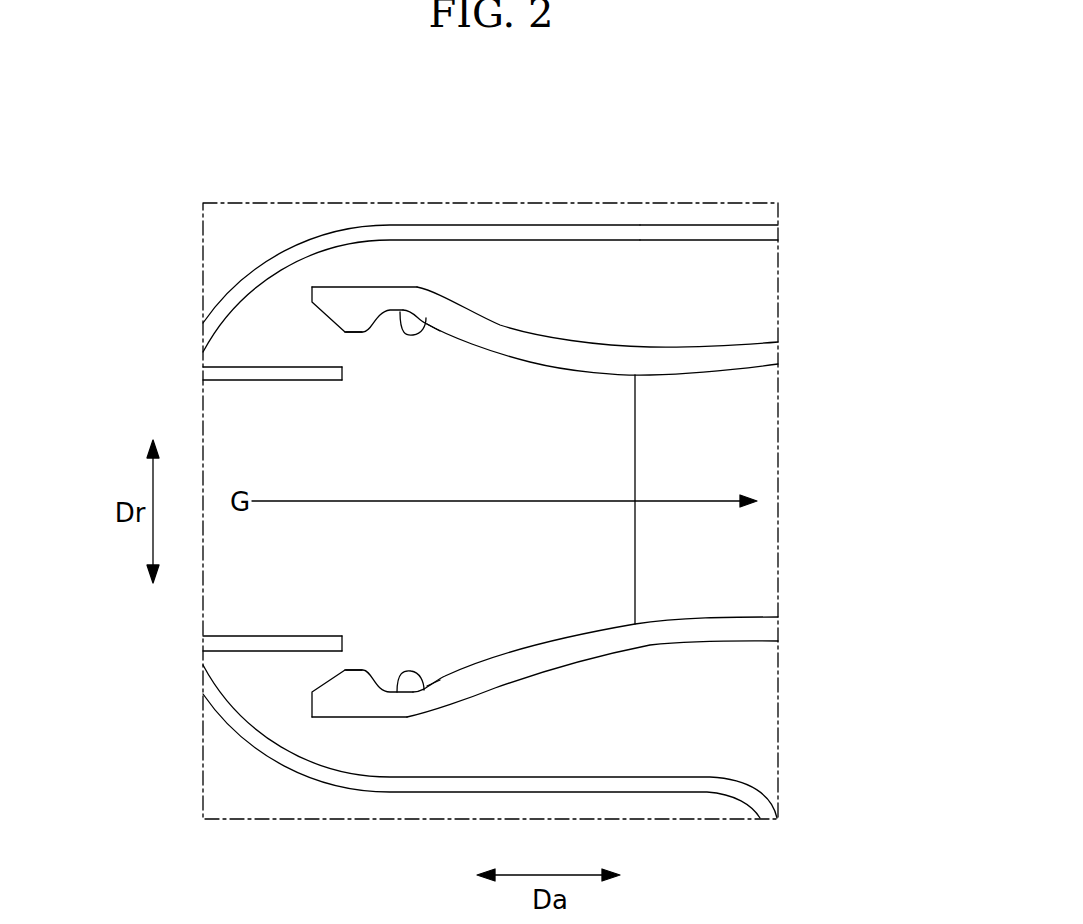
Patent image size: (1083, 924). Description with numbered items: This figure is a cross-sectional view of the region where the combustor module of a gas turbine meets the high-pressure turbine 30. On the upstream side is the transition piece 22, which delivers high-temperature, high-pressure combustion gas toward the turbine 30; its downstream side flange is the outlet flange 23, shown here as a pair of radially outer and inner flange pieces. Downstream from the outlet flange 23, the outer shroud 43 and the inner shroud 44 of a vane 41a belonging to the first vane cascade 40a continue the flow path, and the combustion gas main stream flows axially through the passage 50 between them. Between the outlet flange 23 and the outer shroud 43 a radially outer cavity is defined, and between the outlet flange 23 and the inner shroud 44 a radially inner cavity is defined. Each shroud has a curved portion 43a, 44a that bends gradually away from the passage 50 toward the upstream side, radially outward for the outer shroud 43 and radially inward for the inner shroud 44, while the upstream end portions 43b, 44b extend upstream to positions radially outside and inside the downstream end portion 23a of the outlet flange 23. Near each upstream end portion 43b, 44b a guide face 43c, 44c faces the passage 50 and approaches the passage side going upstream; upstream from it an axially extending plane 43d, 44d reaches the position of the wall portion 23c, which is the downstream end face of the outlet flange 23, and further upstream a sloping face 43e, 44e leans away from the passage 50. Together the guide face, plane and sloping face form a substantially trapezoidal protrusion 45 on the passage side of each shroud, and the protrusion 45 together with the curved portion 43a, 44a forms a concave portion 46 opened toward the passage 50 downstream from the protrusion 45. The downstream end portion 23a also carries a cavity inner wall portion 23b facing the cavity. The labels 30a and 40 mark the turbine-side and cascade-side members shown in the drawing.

The transition piece 22 is at (307, 516).
The outlet flange 23 is at (240, 467).
The downstream end portion 23a is at (286, 381).
The cavity inner wall portion 23b is at (333, 381).
The wall portion 23c is at (323, 367).
The turbine 30 is at (560, 338).
The upstream member surface 30a is at (421, 220).
The downstream member 40 is at (709, 181).
The first vane cascade 40a is at (709, 213).
The vane 41a is at (748, 445).
The outer shroud 43 is at (544, 294).
The curved portion 43a is at (447, 325).
The upstream end portion 43b is at (327, 294).
The guide face 43c is at (402, 325).
The plane 43d is at (350, 335).
The sloping face 43e is at (310, 322).
The inner shroud 44 is at (541, 719).
The curved portion 44a is at (442, 676).
The upstream end portion 44b is at (322, 700).
The guide face 44c is at (397, 675).
The plane 44d is at (366, 670).
The sloping face 44e is at (322, 674).
The protrusion 45 is at (351, 332).
The concave portion 46 is at (437, 320).
The passage 50 is at (583, 403).